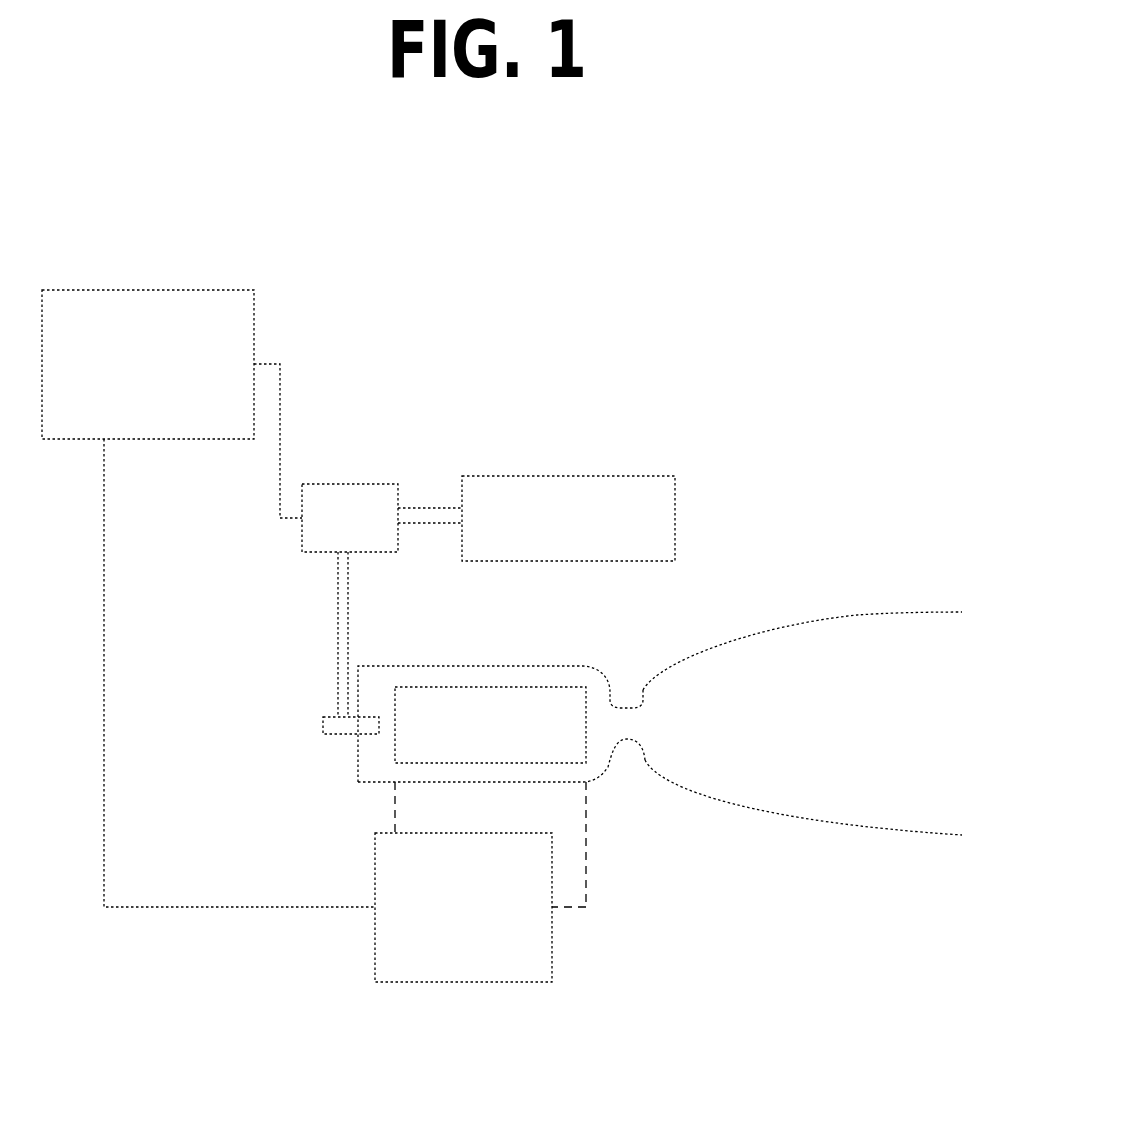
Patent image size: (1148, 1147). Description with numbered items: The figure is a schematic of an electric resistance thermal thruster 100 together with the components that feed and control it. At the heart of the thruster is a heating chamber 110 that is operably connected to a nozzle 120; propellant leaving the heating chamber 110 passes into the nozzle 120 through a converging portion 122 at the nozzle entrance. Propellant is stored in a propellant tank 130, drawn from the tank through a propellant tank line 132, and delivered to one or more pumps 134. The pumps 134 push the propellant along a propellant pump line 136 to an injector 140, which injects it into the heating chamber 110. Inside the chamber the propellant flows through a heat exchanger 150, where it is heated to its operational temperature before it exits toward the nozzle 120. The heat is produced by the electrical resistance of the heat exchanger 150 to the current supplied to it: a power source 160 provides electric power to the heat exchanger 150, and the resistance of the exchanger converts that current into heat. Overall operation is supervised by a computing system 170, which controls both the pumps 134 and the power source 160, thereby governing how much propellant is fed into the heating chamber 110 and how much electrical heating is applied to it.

The electric resistance thermal thruster 100 is at (172, 154).
The heating chamber 110 is at (608, 770).
The nozzle 120 is at (860, 617).
The converging portion 122 is at (650, 716).
The propellant tank 130 is at (570, 476).
The propellant tank line 132 is at (431, 507).
The pump 134 is at (352, 484).
The propellant pump line 136 is at (338, 588).
The injector 140 is at (320, 727).
The heat exchanger 150 is at (498, 687).
The power source 160 is at (457, 982).
The computing system 170 is at (254, 320).